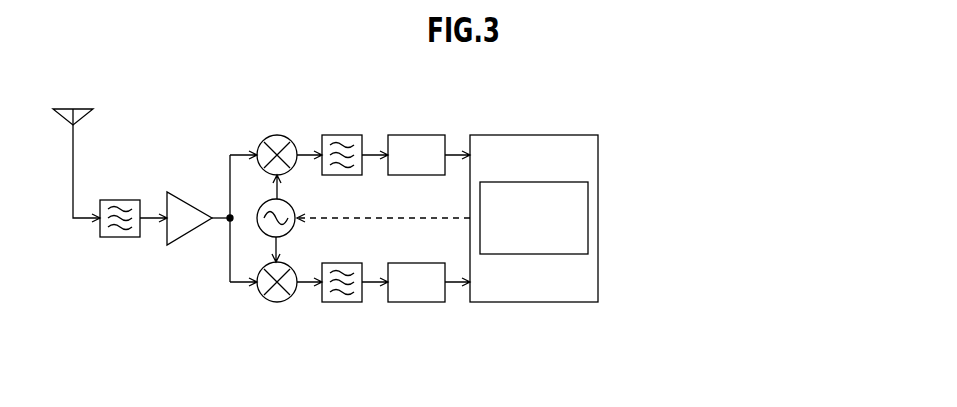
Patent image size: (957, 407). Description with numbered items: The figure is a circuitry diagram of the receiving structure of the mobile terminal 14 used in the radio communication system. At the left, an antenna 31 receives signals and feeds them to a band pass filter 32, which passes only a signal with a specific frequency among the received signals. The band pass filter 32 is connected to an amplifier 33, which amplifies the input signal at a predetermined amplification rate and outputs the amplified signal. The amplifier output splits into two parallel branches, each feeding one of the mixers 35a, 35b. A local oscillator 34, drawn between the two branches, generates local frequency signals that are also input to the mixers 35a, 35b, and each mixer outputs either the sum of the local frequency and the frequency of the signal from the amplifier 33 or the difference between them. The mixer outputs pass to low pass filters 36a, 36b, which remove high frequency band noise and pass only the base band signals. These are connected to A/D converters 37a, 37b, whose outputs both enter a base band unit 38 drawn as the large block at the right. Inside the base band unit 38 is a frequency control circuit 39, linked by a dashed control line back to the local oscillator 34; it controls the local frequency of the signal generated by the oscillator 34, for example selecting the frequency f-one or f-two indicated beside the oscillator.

The mobile terminal 14 is at (581, 176).
The antenna 31 is at (78, 113).
The band pass filter 32 is at (112, 238).
The amplifier 33 is at (177, 203).
The local oscillator 34 is at (288, 204).
The mixer 35a is at (280, 135).
The mixer 35b is at (275, 303).
The low pass filter 36a is at (352, 140).
The low pass filter 36b is at (340, 302).
The A/D converter 37a is at (418, 138).
The A/D converter 37b is at (415, 302).
The base band unit 38 is at (600, 160).
The frequency control circuit 39 is at (582, 220).